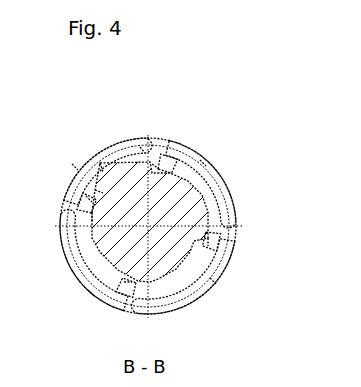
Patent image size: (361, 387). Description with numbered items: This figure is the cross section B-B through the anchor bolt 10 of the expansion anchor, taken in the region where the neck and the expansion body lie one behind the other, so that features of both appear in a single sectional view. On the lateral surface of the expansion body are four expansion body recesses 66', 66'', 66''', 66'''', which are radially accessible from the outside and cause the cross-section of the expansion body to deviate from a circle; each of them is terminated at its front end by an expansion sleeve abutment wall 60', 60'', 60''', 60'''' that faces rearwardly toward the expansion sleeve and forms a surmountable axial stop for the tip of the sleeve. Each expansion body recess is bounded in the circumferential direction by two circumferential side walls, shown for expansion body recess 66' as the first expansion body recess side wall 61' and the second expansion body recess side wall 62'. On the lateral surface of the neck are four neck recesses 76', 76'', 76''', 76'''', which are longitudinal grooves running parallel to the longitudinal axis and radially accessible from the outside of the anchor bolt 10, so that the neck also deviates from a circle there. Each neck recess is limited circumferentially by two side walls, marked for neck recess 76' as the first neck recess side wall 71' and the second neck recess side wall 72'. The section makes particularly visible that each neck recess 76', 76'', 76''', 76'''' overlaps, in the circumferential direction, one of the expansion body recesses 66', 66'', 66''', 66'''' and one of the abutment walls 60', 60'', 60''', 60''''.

The anchor bolt 10 is at (162, 192).
The expansion sleeve abutment wall 60' is at (108, 138).
The expansion sleeve abutment wall 60'' is at (80, 271).
The expansion sleeve abutment wall 60''' is at (199, 299).
The expansion sleeve abutment wall 60'''' is at (245, 182).
The first expansion body recess side wall 61' is at (125, 121).
The second expansion body recess side wall 62' is at (70, 109).
The expansion body recess 66' is at (50, 150).
The expansion body recess 66'' is at (75, 336).
The expansion body recess 66''' is at (264, 297).
The expansion body recess 66'''' is at (255, 137).
The first neck recess side wall 71' is at (65, 137).
The second neck recess side wall 72' is at (50, 200).
The neck recess 76' is at (50, 179).
The neck recess 76'' is at (127, 315).
The neck recess 76''' is at (261, 246).
The neck recess 76'''' is at (160, 117).